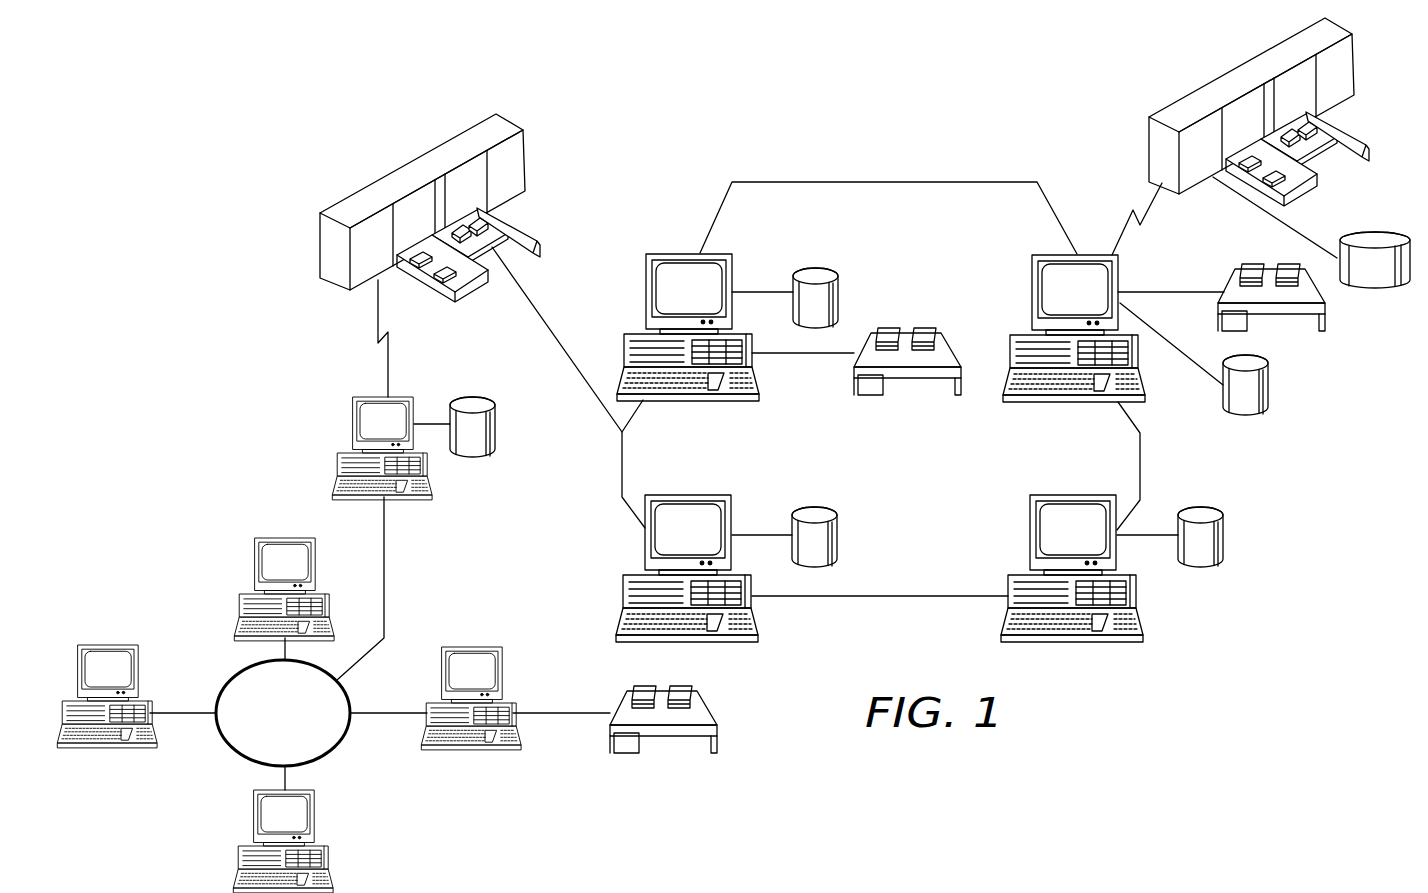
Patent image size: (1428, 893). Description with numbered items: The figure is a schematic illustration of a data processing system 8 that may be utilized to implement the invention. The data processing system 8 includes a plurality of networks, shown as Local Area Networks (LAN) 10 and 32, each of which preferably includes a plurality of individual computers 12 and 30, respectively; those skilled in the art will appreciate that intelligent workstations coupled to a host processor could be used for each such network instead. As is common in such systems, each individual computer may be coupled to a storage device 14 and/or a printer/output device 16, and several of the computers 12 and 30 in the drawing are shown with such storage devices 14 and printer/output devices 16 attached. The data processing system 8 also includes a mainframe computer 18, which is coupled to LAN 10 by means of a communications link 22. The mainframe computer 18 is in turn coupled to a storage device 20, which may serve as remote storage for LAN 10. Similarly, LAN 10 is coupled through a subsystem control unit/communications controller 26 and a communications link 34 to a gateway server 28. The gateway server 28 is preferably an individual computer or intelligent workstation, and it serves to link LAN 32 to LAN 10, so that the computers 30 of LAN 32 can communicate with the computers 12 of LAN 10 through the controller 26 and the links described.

The data processing system 8 is at (833, 156).
The Local Area Network 10 is at (890, 597).
The individual computer 12 is at (667, 253).
The storage device 14 is at (838, 297).
The printer/output device 16 is at (945, 353).
The mainframe computer 18 is at (1243, 68).
The storage device 20 is at (1385, 240).
The communications link 22 is at (1132, 223).
The subsystem control unit/communications controller 26 is at (405, 165).
The gateway server 28 is at (353, 420).
The individual computer 30 is at (285, 537).
The Local Area Network 32 is at (229, 748).
The communications link 34 is at (377, 312).